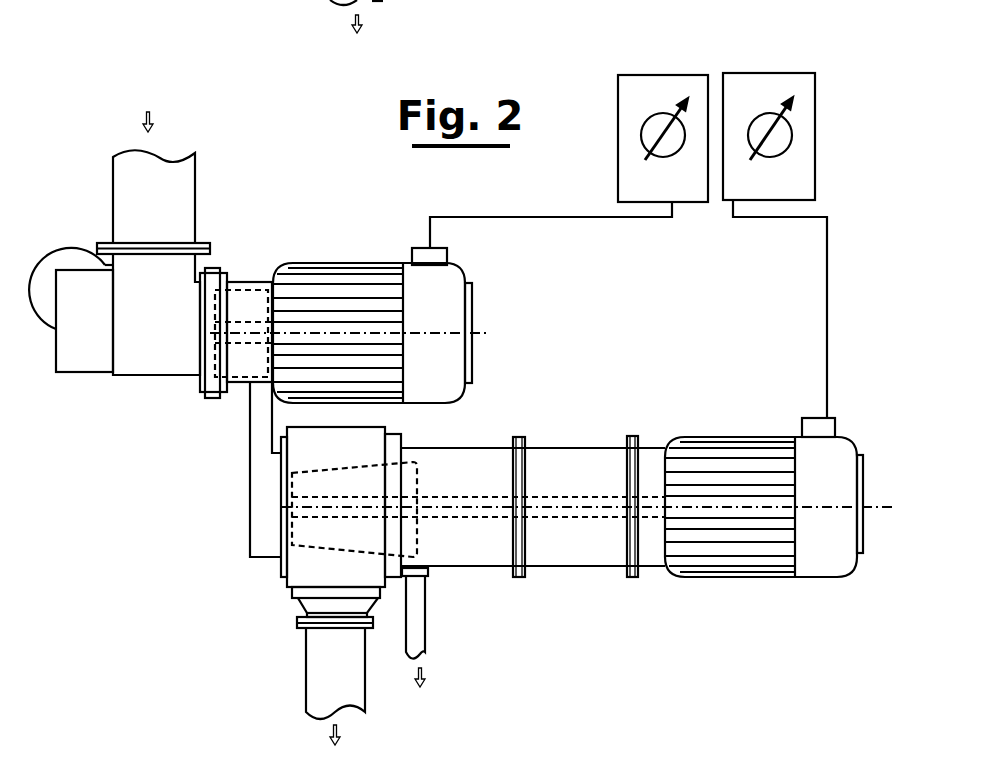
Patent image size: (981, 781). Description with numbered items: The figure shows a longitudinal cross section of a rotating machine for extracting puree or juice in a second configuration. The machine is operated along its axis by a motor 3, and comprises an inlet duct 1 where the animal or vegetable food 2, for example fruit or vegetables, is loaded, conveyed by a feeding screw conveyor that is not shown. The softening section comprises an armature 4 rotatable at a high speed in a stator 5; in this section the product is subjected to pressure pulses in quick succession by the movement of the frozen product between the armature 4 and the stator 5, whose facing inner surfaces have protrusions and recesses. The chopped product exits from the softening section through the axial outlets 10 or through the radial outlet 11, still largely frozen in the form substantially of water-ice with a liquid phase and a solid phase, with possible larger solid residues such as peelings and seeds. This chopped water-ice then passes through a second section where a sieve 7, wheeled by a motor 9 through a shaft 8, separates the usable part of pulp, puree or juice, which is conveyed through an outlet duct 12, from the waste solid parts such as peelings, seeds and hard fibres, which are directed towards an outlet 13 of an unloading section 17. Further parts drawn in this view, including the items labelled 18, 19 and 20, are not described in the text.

The inlet duct 1 is at (167, 352).
The animal or vegetable food 2 is at (153, 165).
The motor 3 is at (68, 257).
The armature 4 is at (238, 383).
The stator 5 is at (240, 292).
The sieve 7 is at (417, 477).
The shaft 8 is at (562, 497).
The motor 9 is at (725, 457).
The axial outlets 10 is at (252, 467).
The radial outlet 11 is at (312, 647).
The outlet duct 12 is at (497, 332).
The outlet 13 is at (420, 610).
The unloading section 17 is at (567, 453).
The impeller 18 is at (248, 320).
The motor 19 is at (370, 287).
The measuring device 20 is at (647, 93).